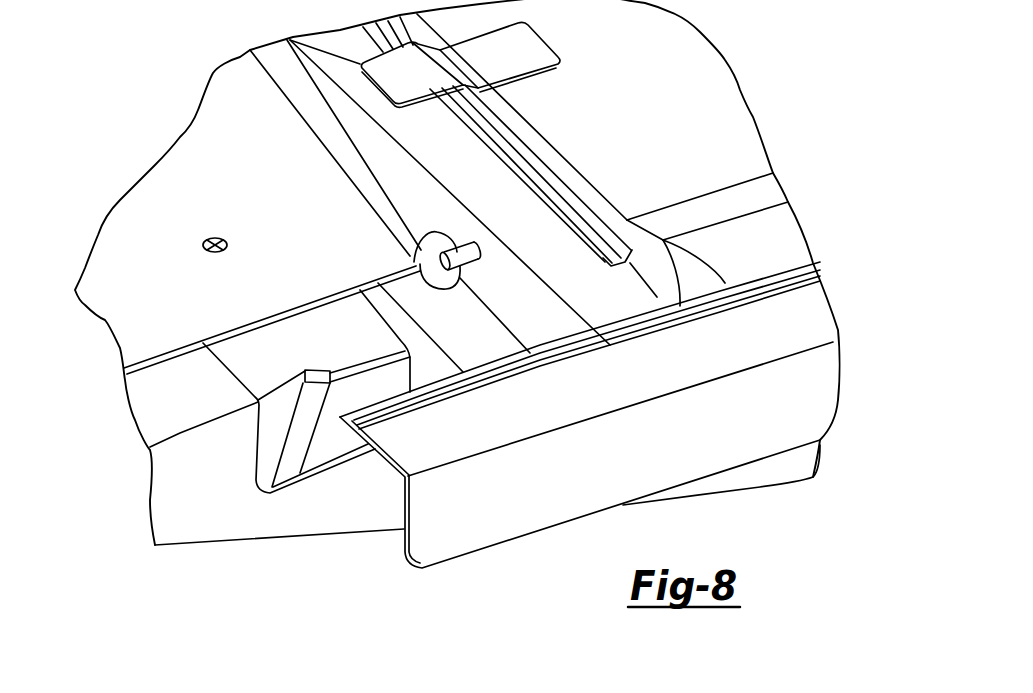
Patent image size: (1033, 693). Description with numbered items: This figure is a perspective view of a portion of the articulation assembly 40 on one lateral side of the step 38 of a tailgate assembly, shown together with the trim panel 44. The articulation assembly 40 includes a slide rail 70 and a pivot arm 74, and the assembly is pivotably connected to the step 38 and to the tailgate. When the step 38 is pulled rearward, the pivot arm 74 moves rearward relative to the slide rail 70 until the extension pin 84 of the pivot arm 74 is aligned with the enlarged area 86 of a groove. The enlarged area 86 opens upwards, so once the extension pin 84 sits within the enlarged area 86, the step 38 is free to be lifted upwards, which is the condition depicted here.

The step 38 is at (727, 120).
The articulation assembly 40 is at (600, 306).
The trim panel 44 is at (125, 243).
The slide rail 70 is at (367, 187).
The pivot arm 74 is at (473, 152).
The extension pin 84 is at (417, 249).
The enlarged area 86 is at (453, 287).